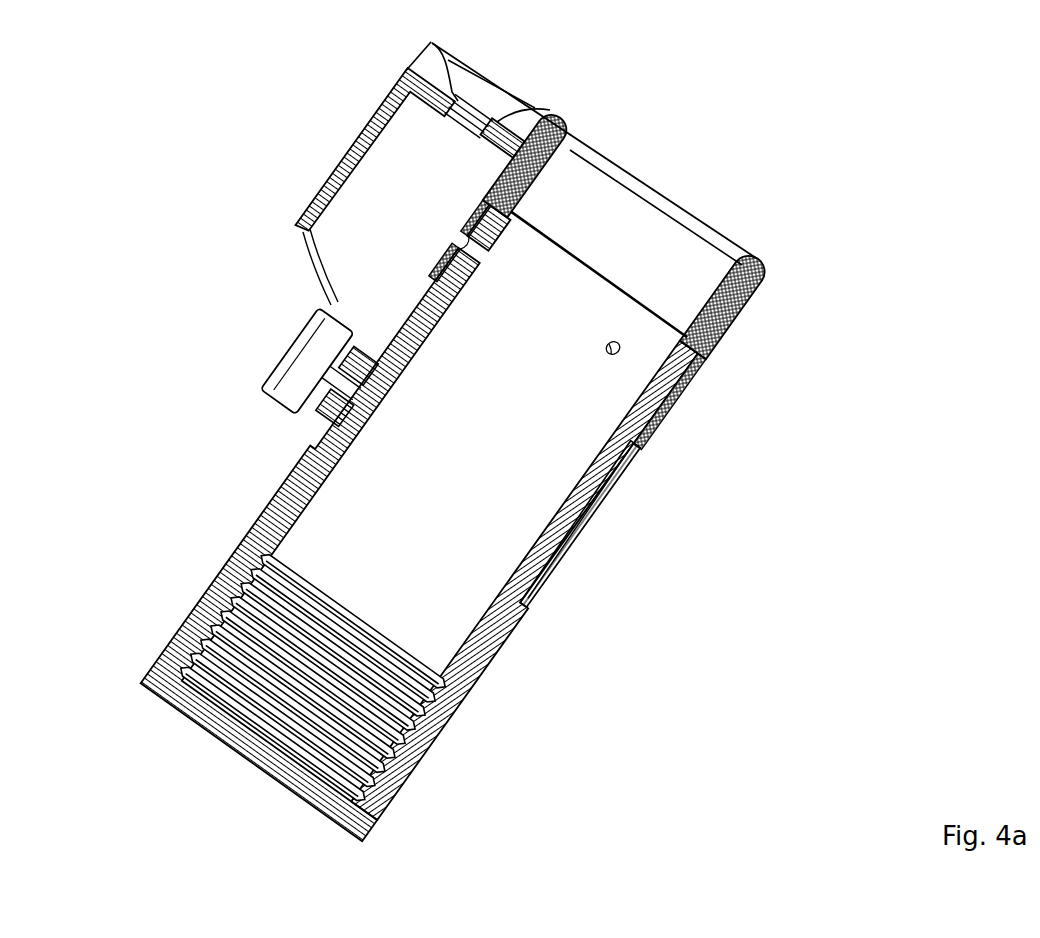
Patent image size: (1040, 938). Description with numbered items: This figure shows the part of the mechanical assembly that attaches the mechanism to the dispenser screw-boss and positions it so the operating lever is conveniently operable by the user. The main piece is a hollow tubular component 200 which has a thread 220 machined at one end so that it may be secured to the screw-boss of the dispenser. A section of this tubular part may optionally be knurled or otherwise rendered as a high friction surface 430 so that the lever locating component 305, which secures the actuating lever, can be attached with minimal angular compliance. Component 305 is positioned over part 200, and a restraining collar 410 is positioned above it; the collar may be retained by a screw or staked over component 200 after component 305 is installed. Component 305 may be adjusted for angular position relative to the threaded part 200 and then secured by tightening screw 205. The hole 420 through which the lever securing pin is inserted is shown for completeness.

The hollow tubular component 200 is at (372, 812).
The screw 205 is at (290, 364).
The thread 220 is at (313, 797).
The lever locating component 305 is at (560, 556).
The restraining collar 410 is at (494, 242).
The hole 420 is at (467, 128).
The high friction surface 430 is at (592, 498).